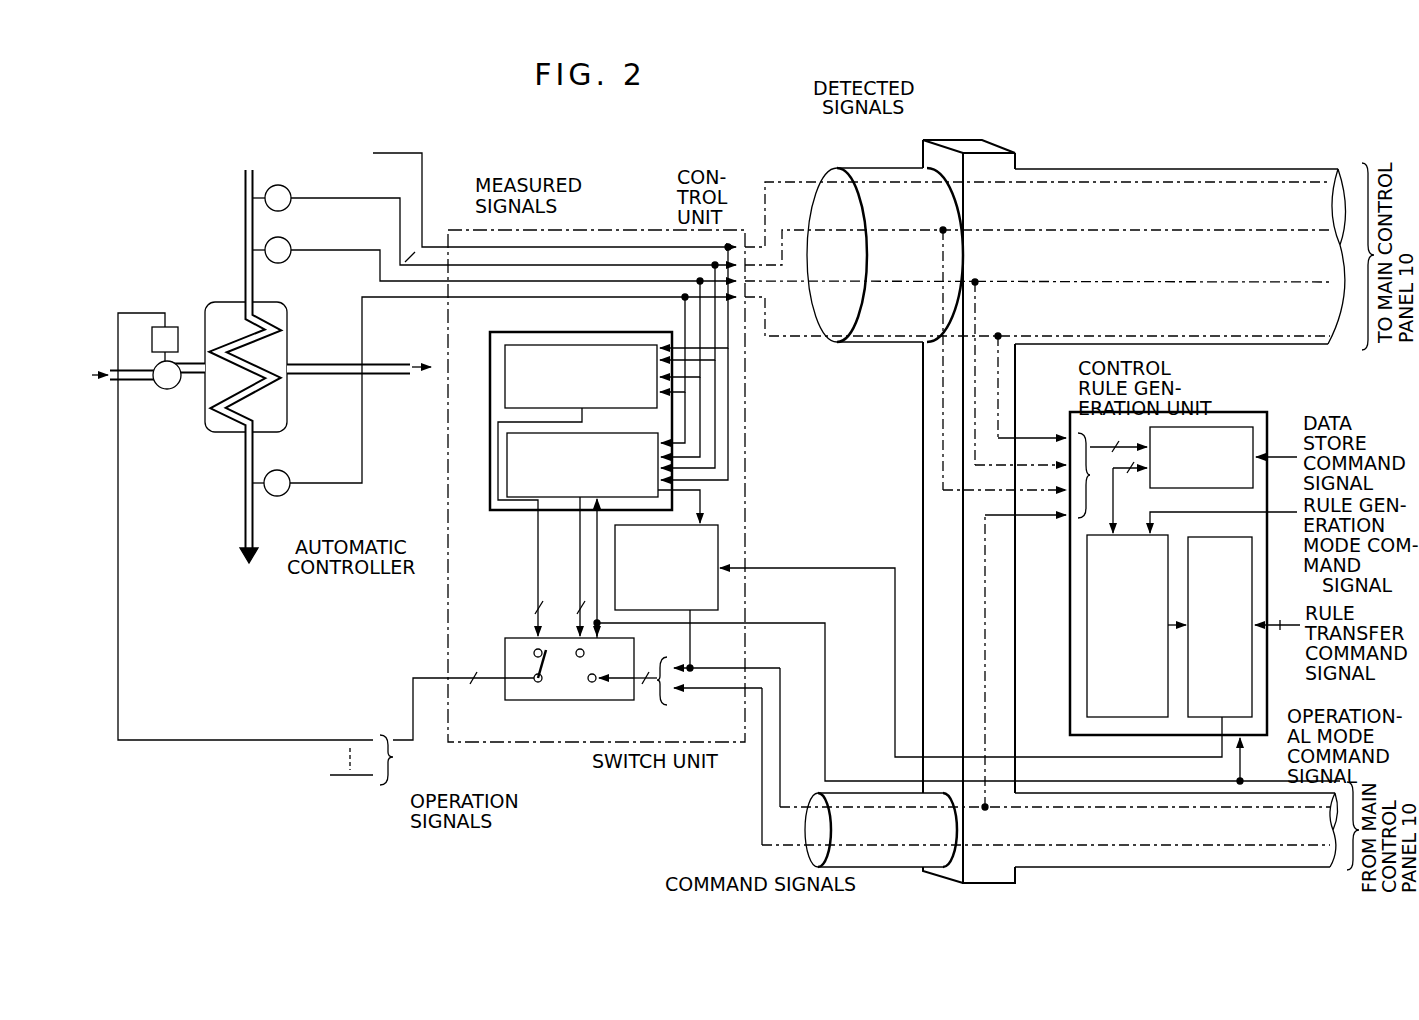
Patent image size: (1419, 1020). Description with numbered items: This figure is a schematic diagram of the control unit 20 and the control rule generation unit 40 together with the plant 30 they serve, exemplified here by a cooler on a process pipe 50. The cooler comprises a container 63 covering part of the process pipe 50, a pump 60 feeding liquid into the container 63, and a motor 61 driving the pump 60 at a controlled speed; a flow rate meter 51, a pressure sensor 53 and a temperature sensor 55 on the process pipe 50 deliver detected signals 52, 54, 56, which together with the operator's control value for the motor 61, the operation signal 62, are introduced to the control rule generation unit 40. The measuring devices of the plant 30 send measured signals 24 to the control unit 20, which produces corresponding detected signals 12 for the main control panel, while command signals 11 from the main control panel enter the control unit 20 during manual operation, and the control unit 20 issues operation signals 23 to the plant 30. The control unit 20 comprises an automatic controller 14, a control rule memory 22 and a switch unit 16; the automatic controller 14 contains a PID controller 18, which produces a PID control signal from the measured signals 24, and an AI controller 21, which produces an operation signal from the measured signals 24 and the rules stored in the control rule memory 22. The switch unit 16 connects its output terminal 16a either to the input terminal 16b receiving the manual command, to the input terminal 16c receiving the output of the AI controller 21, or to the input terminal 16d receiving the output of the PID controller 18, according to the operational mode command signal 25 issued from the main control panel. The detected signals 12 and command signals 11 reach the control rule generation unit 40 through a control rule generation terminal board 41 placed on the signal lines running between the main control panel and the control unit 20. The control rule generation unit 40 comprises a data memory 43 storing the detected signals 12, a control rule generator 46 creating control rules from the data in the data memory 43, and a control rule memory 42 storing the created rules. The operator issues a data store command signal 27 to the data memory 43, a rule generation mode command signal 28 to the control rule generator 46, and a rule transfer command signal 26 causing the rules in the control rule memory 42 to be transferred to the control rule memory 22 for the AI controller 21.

The plant 30 is at (252, 165).
The process pipe 50 is at (245, 185).
The flow rate meter 51 is at (279, 185).
The pressure sensor 53 is at (296, 240).
The temperature sensor 55 is at (281, 470).
The pump 60 is at (167, 390).
The motor 61 is at (166, 325).
The operation signal 62 is at (120, 551).
The container 63 is at (205, 433).
The automatic controller 14 is at (490, 450).
The PID controller 18 is at (620, 345).
The AI controller 21 is at (515, 500).
The control rule memory 22 is at (733, 567).
The control unit 20 is at (600, 232).
The measured signals 24 is at (440, 245).
The detected signal 52 is at (410, 268).
The detected signal 54 is at (427, 283).
The detected signal 56 is at (465, 299).
The switch unit 16 is at (556, 688).
The output terminal 16a is at (535, 682).
The input terminal 16b is at (592, 683).
The input terminal 16c is at (584, 653).
The input terminal 16d is at (537, 650).
The operation signals 23 is at (405, 745).
The detected signals 12 is at (878, 167).
The command signals 11 is at (898, 868).
The control rule generation terminal board 41 is at (977, 139).
The control rule generation unit 40 is at (1071, 411).
The data memory 43 is at (1247, 425).
The control rule generator 46 is at (1087, 687).
The control rule memory 42 is at (1254, 588).
The data store command signal 27 is at (1284, 456).
The rule generation mode command signal 28 is at (1290, 511).
The rule transfer command signal 26 is at (1281, 632).
The operational mode command signal 25 is at (1270, 781).